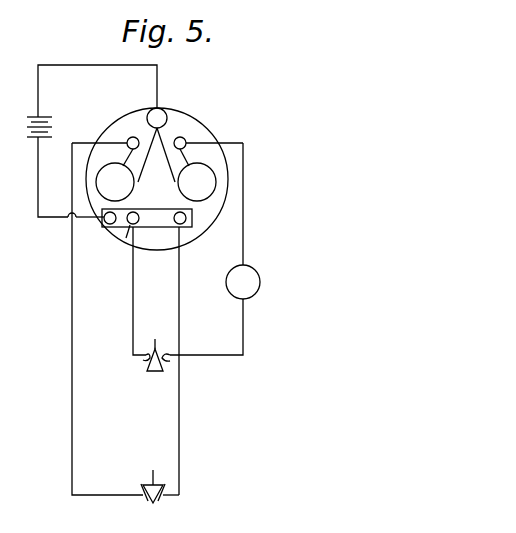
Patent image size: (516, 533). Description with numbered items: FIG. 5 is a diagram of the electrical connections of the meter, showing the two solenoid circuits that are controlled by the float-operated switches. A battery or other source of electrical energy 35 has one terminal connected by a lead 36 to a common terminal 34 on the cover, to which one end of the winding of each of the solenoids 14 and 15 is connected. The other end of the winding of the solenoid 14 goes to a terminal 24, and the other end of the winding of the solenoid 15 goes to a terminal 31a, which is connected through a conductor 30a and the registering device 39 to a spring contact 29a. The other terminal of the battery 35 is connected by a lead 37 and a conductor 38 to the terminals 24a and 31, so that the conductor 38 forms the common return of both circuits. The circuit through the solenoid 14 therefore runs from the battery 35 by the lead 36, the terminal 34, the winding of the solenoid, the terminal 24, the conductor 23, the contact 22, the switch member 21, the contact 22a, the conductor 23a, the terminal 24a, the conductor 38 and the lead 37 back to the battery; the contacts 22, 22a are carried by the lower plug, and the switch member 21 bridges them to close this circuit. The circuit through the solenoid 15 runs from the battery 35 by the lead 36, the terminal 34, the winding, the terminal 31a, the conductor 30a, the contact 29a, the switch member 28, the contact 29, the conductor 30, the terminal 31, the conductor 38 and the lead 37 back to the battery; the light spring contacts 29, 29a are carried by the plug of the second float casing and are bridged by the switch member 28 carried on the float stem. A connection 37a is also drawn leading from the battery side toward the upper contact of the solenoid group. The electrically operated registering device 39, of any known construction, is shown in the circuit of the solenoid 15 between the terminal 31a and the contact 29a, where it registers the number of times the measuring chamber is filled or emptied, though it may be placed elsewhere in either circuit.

The solenoid 14 is at (115, 182).
The solenoid 15 is at (197, 182).
The switch member 21 is at (152, 482).
The contact 22 is at (147, 502).
The contact 22a is at (160, 502).
The conductor 23 is at (70, 432).
The conductor 23a is at (179, 430).
The terminal 24 is at (128, 139).
The terminal 24a is at (181, 227).
The switch member 28 is at (149, 372).
The spring contact 29 is at (142, 360).
The spring contact 29a is at (175, 362).
The conductor 30 is at (132, 311).
The conductor 30a is at (243, 237).
The terminal 31 is at (126, 238).
The common terminal 34 is at (161, 110).
The battery 35 is at (27, 132).
The lead 36 is at (106, 65).
The lead 37 is at (38, 192).
The conductor 37a is at (183, 137).
The conductor 38 is at (155, 228).
The registering device 39 is at (260, 282).